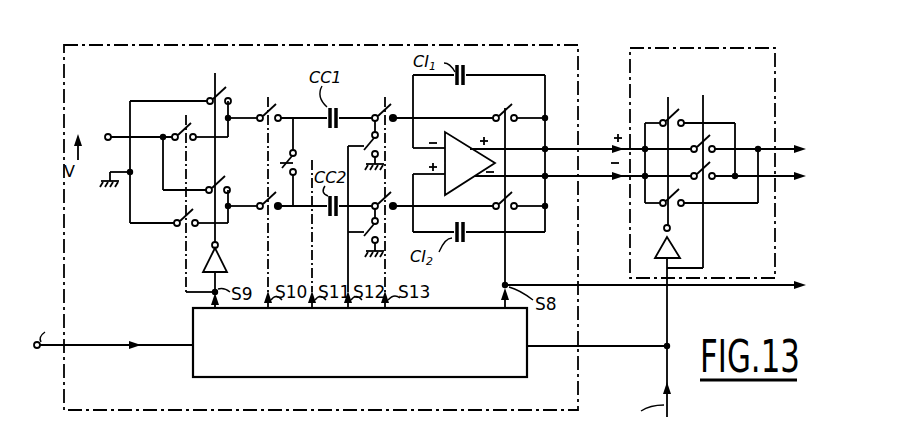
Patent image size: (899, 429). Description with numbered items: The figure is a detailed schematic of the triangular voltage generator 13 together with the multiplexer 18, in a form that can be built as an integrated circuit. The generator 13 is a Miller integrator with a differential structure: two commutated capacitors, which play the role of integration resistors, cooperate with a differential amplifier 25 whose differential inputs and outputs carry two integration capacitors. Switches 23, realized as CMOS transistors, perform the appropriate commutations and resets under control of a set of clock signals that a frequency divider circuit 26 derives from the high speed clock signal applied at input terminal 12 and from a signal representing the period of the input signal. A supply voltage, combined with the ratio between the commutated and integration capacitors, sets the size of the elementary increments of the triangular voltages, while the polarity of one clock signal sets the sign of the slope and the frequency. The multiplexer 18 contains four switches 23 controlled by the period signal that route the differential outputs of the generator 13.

The input terminal 12 is at (37, 350).
The triangular voltage generator 13 is at (272, 43).
The multiplexer 18 is at (693, 46).
The switches 23 is at (185, 127).
The differential amplifier 25 is at (466, 140).
The frequency divider circuit 26 is at (449, 378).